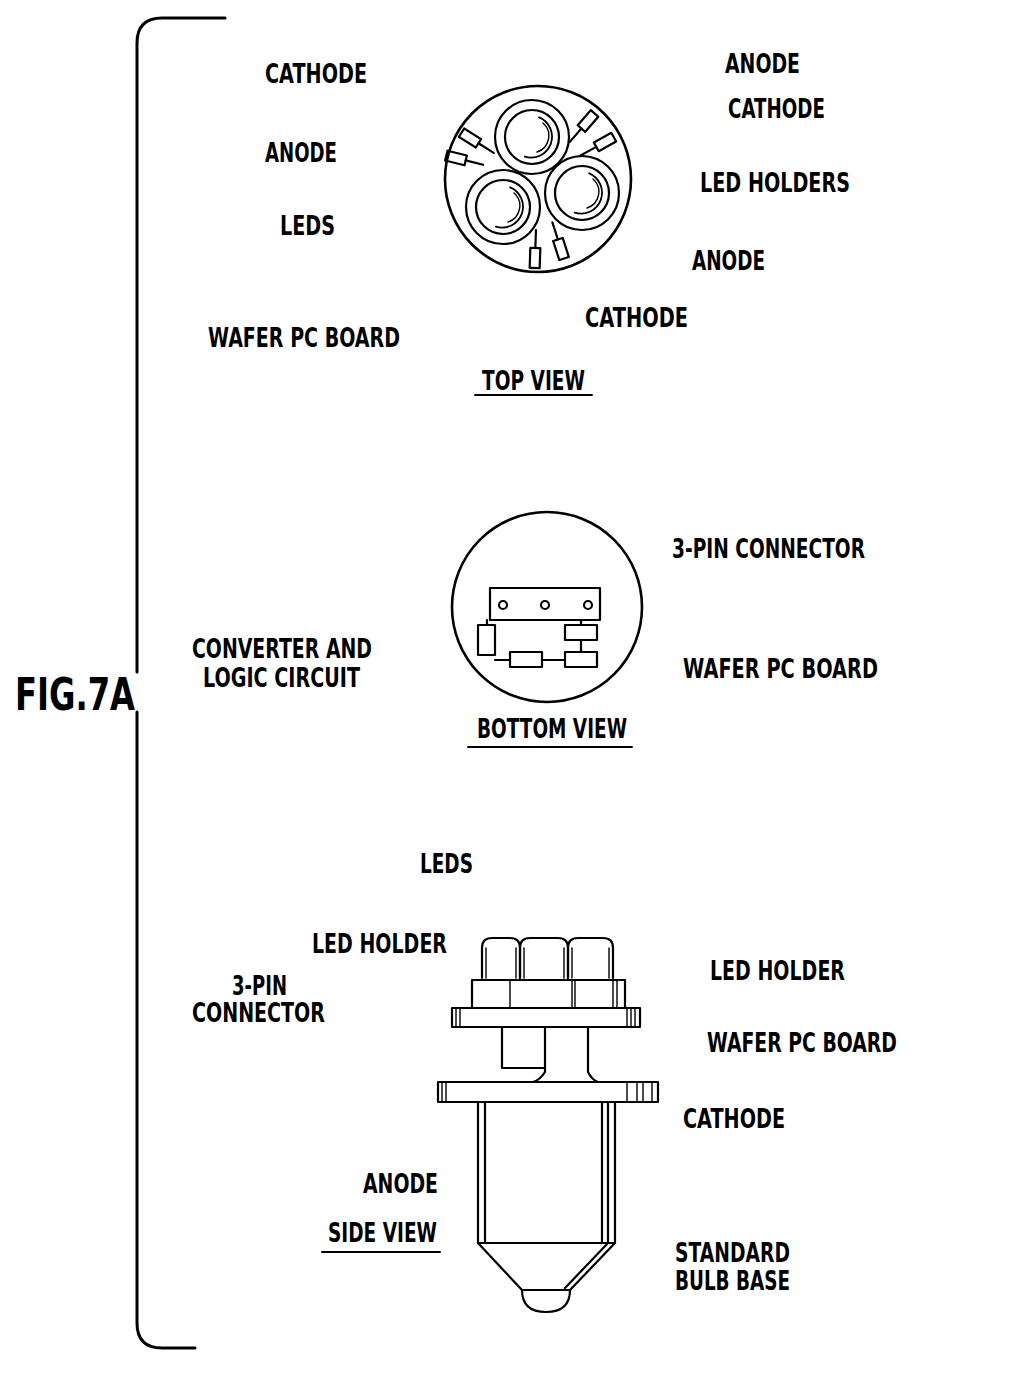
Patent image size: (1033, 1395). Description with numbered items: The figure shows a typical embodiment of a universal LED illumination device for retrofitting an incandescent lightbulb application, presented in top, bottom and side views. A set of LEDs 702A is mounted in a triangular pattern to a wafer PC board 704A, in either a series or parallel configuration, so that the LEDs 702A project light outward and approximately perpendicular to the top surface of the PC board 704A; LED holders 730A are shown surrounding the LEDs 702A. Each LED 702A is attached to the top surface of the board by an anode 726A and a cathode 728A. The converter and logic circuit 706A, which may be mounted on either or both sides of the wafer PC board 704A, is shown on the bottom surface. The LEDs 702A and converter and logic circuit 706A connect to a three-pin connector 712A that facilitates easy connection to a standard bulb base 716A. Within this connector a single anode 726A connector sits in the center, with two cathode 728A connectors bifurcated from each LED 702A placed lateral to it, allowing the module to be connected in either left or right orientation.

The LEDs 702A is at (587, 200).
The wafer PC board 704A is at (485, 250).
The converter and logic circuit 706A is at (478, 636).
The 3-pin connector 712A is at (600, 604).
The standard bulb base 716A is at (617, 1190).
The anode 726A is at (450, 156).
The cathode 728A is at (460, 132).
The LED holders 730A is at (593, 207).